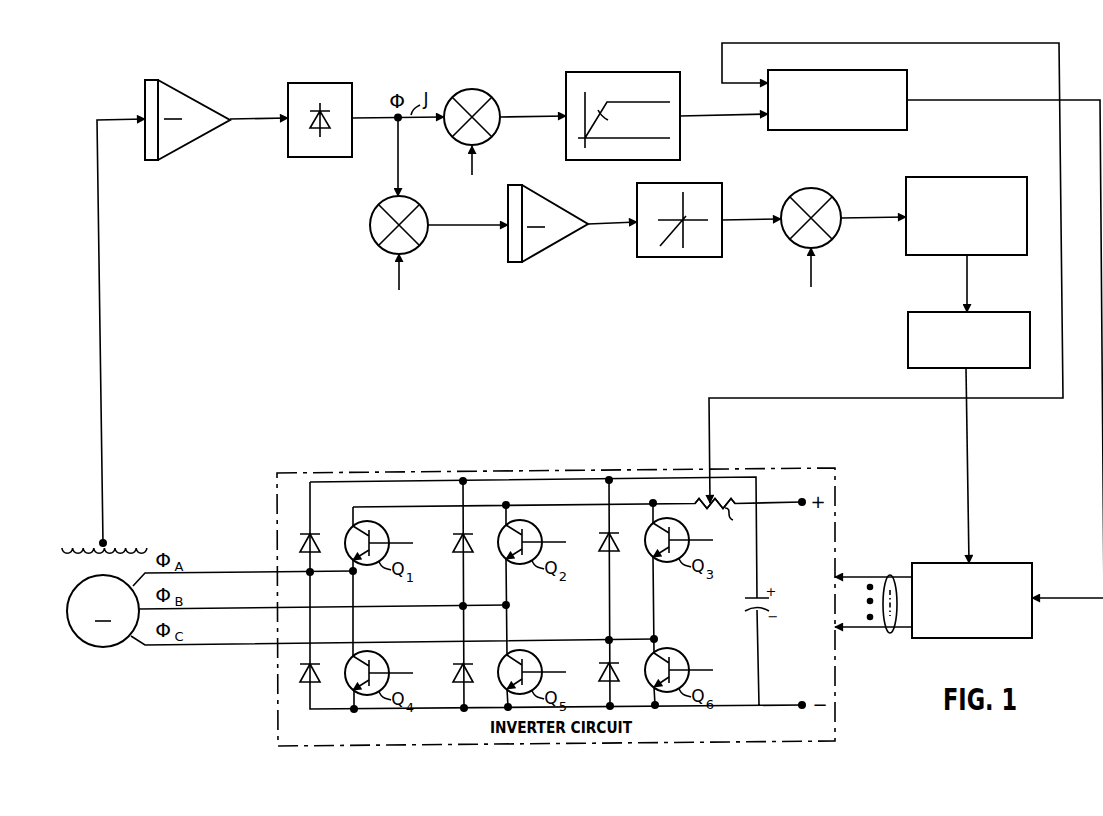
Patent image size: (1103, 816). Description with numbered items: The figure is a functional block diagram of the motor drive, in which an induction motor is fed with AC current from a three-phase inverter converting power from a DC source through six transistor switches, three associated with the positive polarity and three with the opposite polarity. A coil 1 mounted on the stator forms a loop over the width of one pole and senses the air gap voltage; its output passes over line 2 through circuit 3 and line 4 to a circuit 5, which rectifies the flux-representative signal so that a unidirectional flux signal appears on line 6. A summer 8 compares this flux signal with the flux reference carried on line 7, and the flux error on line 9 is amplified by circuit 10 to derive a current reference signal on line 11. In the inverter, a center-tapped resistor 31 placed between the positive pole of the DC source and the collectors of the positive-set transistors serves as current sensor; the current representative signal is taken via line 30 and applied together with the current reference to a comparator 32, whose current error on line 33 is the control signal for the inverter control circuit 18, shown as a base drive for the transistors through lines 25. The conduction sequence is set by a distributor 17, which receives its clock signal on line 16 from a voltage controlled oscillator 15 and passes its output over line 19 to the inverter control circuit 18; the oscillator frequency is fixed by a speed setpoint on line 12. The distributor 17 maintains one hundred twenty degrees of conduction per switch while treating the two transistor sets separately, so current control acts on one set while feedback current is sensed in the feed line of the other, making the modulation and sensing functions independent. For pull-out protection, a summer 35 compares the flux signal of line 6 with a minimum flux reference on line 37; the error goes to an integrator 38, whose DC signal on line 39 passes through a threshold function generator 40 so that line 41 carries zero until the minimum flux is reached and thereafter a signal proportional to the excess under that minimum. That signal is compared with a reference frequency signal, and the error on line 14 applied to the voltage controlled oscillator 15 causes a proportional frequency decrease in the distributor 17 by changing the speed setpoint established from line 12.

The coil 1 is at (143, 549).
The flux feedback signal line 2 is at (97, 148).
The integrating amplifier 3 is at (180, 88).
The integrator output line 4 is at (262, 117).
The rectifier circuit 5 is at (313, 83).
The flux signal line 6 is at (372, 114).
The flux reference line 7 is at (472, 160).
The summer 8 is at (465, 90).
The flux error line 9 is at (518, 120).
The amplifier circuit 10 is at (648, 72).
The current reference line 11 is at (708, 116).
The speed setpoint line 12 is at (808, 276).
The frequency error line 14 is at (874, 226).
The voltage controlled oscillator 15 is at (946, 177).
The clock signal line 16 is at (968, 264).
The distributor 17 is at (1003, 310).
The inverter control circuit 18 is at (1006, 561).
The distributor output line 19 is at (968, 442).
The base drive lines 25 is at (891, 574).
The current feedback line 30 is at (722, 72).
The current sensing resistor 31 is at (702, 499).
The comparator 32 is at (876, 70).
The current error line 33 is at (1018, 100).
The summer 35 is at (366, 226).
The minimum flux reference line 37 is at (399, 280).
The integrator 38 is at (546, 198).
The integrator output line 39 is at (606, 222).
The threshold function generator 40 is at (702, 178).
The threshold output line 41 is at (753, 221).